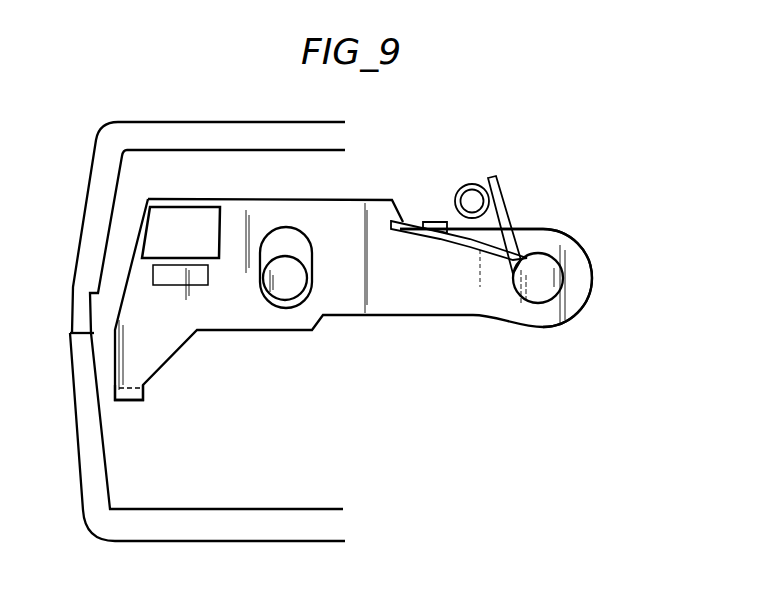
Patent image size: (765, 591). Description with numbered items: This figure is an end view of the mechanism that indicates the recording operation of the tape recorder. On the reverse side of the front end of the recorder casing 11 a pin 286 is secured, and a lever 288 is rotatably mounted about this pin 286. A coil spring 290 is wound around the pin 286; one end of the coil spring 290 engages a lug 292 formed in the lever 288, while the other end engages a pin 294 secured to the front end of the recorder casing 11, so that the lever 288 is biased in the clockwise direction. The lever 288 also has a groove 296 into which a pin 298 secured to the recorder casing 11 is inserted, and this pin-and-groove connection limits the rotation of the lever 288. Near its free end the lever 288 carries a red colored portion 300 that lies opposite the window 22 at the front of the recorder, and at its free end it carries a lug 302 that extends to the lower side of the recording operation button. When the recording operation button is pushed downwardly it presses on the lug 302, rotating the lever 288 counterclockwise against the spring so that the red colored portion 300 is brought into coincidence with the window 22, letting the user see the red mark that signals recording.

The recorder casing 11 is at (88, 226).
The window 22 is at (197, 285).
The pin 286 is at (563, 279).
The lever 288 is at (405, 316).
The coil spring 290 is at (457, 245).
The lug 292 is at (437, 222).
The pin 294 is at (473, 193).
The groove 296 is at (290, 229).
The pin 298 is at (295, 288).
The red colored portion 300 is at (195, 207).
The lug 302 is at (137, 400).